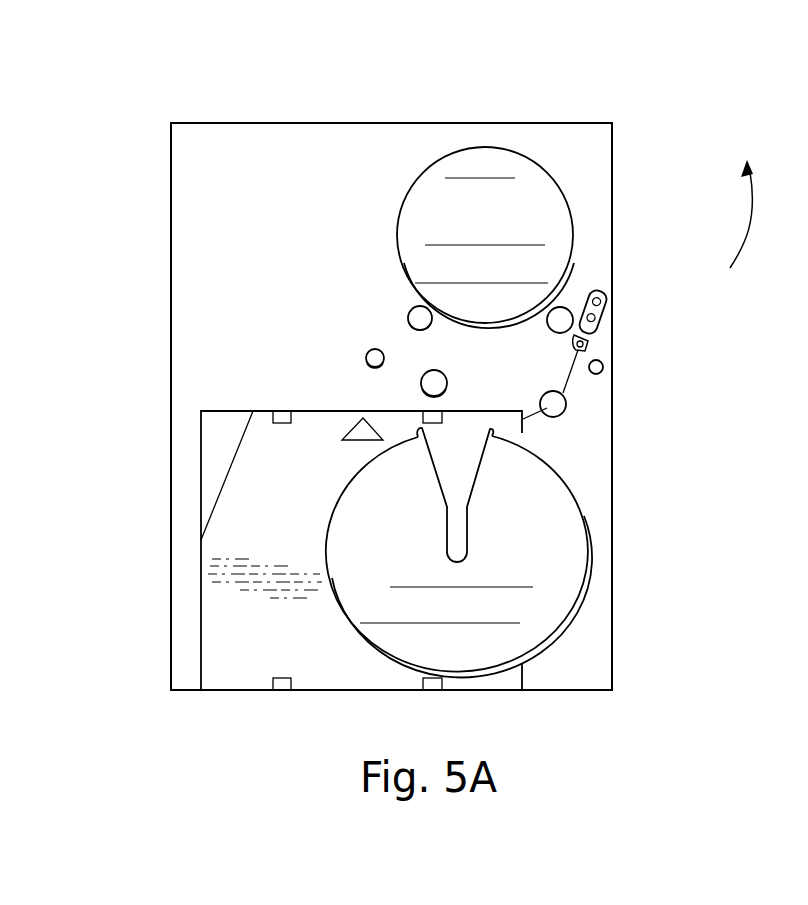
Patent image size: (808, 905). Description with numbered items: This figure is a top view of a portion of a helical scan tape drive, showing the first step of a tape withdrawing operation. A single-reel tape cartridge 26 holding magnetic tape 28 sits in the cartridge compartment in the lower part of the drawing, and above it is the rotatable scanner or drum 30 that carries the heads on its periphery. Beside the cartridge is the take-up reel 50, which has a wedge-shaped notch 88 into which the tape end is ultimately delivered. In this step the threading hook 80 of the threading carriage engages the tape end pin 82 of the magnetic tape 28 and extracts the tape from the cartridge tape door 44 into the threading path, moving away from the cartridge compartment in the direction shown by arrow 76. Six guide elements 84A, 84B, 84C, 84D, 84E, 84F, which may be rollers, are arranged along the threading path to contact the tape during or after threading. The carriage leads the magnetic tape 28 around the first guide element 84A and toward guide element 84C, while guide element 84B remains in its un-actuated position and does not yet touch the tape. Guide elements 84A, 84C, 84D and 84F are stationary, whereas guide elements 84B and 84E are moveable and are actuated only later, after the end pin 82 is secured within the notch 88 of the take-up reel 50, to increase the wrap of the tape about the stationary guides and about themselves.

The single-reel tape cartridge 26 is at (215, 643).
The magnetic tape 28 is at (567, 382).
The rotatable scanner or drum 30 is at (540, 222).
The cartridge tape door 44 is at (525, 430).
The take-up reel 50 is at (558, 572).
The arrow 76 is at (760, 223).
The threading hook 80 is at (597, 302).
The tape end pin 82 is at (585, 340).
The first guide element 84A is at (560, 412).
The moveable guide element 84B is at (600, 367).
The guide element 84C is at (563, 315).
The guide element 84D is at (418, 318).
The moveable guide element 84E is at (367, 362).
The guide element 84F is at (432, 385).
The wedge-shaped notch 88 is at (468, 461).